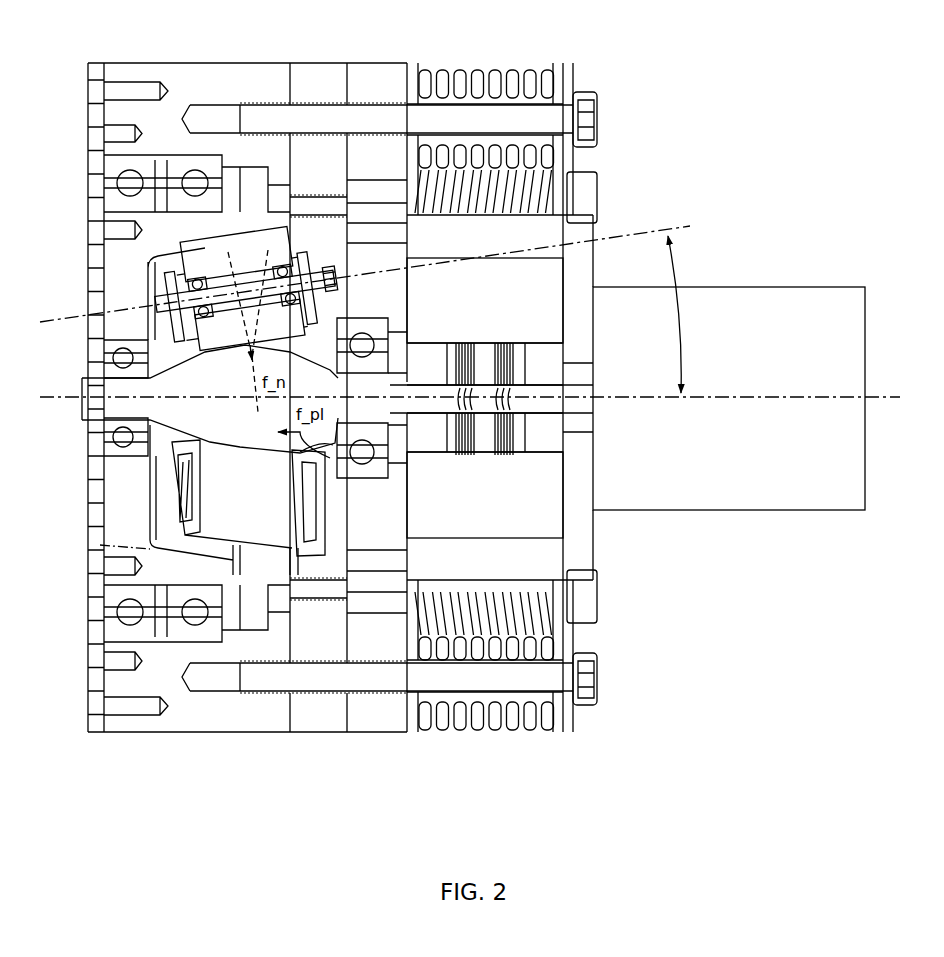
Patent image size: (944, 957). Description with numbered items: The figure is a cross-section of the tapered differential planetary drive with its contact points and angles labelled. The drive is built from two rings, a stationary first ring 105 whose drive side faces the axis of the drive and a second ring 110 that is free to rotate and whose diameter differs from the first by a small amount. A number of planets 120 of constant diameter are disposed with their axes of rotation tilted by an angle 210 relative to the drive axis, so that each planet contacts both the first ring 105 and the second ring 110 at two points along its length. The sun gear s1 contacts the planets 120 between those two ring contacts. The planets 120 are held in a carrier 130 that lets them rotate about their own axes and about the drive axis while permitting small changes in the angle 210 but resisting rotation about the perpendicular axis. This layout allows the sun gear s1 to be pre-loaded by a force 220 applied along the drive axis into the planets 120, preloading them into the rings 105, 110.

The first ring 105 is at (268, 245).
The second ring 110 is at (212, 250).
The planets 120 is at (212, 522).
The carrier 130 is at (316, 548).
The angle θ_P 210 is at (675, 270).
The pre-load force F_pl 220 is at (330, 458).
The sun gear s1 is at (302, 383).